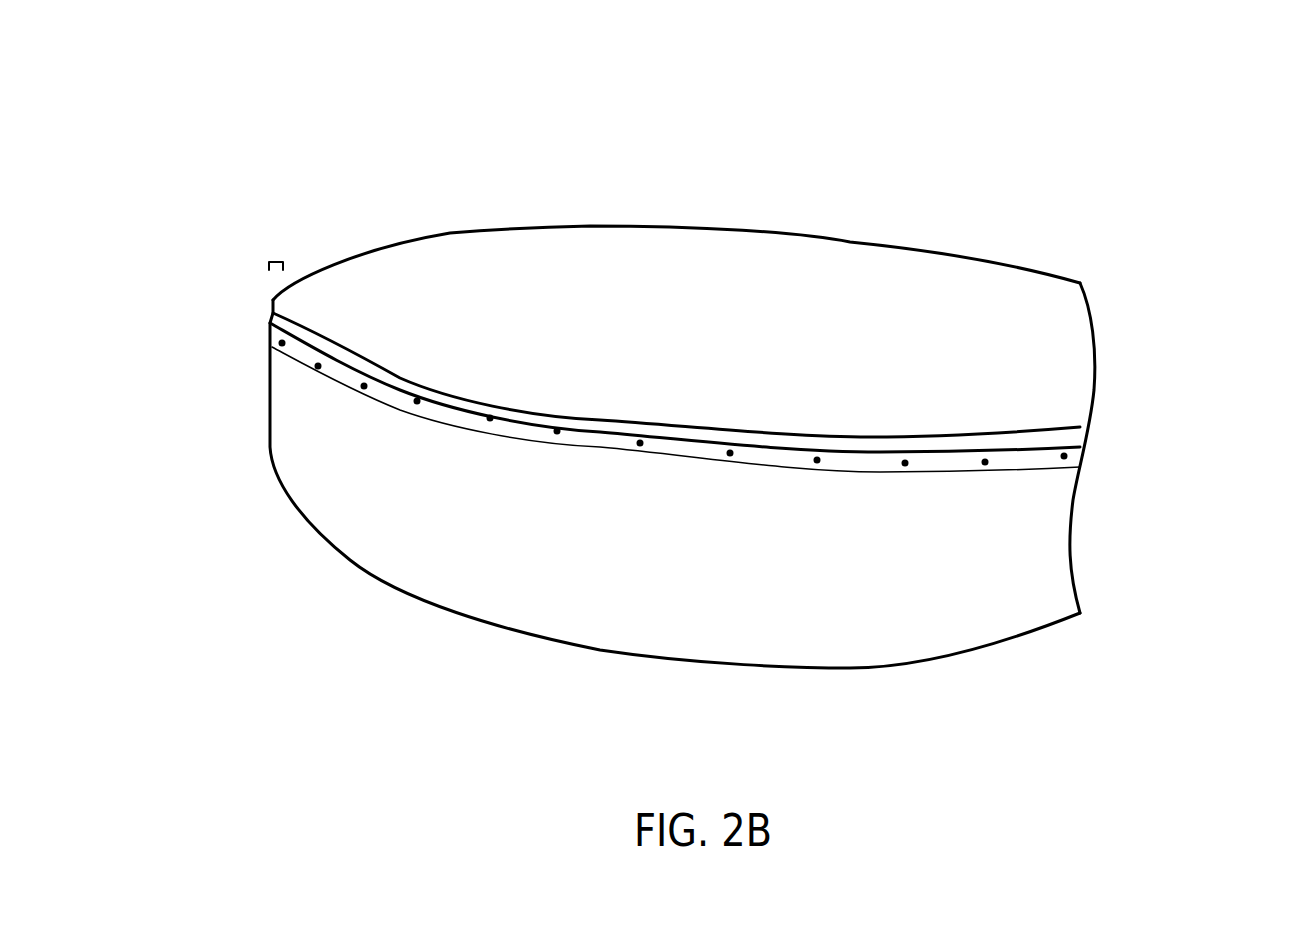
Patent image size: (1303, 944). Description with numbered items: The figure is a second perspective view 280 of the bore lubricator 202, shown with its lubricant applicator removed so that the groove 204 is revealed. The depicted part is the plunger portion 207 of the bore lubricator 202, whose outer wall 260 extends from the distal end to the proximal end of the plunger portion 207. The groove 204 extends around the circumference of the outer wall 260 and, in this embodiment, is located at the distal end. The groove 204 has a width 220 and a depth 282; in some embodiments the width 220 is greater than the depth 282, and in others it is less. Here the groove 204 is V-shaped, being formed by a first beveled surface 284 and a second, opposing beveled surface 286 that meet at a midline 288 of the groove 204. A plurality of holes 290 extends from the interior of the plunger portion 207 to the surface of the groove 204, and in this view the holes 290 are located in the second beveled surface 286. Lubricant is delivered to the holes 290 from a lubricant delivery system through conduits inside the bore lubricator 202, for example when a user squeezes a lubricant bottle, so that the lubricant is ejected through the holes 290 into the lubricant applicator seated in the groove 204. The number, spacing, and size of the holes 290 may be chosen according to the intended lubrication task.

The second perspective view 280 is at (1048, 115).
The bore lubricator 202 is at (550, 185).
The groove 204 is at (608, 408).
The plunger portion 207 is at (1123, 423).
The width 220 is at (248, 340).
The outer wall 260 is at (272, 407).
The depth 282 is at (277, 260).
The first beveled surface 284 is at (428, 392).
The second beveled surface 286 is at (398, 395).
The midline 288 is at (465, 408).
The plurality of holes 290 is at (557, 432).